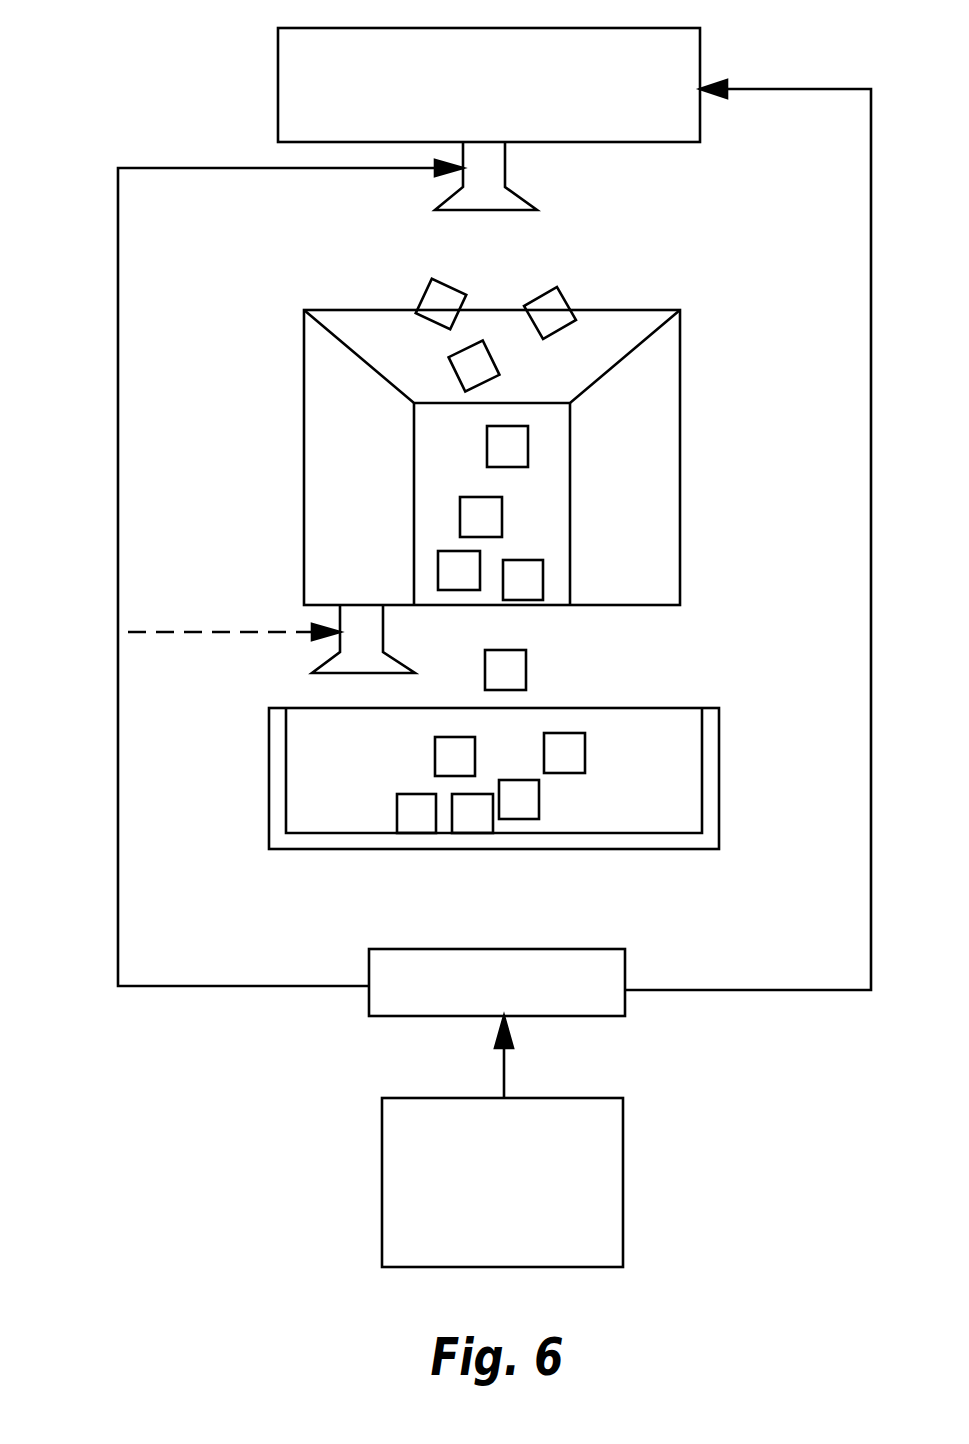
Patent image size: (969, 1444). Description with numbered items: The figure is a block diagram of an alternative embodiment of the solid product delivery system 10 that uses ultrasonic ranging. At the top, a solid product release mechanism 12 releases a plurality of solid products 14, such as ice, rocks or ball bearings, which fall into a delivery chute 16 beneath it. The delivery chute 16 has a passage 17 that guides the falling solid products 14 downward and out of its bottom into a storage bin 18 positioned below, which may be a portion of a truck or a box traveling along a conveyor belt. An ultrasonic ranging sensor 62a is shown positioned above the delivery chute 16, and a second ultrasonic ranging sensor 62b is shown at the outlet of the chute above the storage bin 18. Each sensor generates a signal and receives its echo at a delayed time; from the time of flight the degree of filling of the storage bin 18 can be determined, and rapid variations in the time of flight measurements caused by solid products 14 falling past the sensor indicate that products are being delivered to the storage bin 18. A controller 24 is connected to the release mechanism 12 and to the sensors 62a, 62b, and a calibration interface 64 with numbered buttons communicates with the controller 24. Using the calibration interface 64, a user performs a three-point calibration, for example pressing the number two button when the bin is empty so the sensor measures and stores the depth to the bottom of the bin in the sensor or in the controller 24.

The system 10 is at (110, 72).
The solid product release mechanism 12 is at (278, 88).
The solid products 14 is at (421, 300).
The delivery chute 16 is at (682, 372).
The passage 17 is at (540, 525).
The storage bin 18 is at (269, 783).
The controller 24 is at (369, 966).
The ultrasonic ranging sensor 62a is at (507, 170).
The ultrasonic ranging sensor 62b is at (384, 630).
The calibration interface 64 is at (382, 1155).